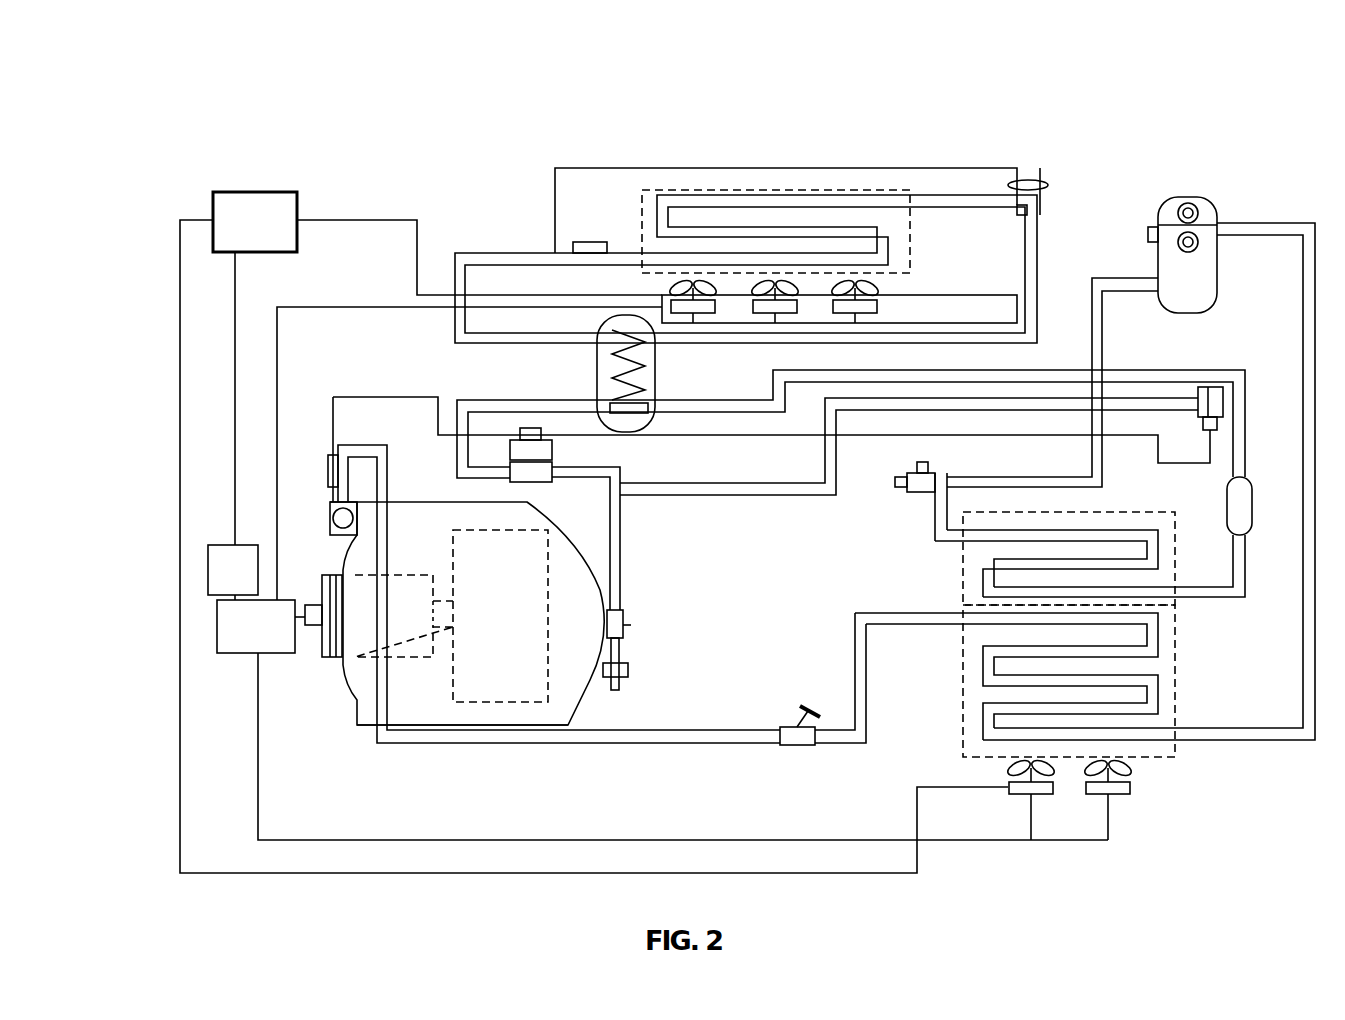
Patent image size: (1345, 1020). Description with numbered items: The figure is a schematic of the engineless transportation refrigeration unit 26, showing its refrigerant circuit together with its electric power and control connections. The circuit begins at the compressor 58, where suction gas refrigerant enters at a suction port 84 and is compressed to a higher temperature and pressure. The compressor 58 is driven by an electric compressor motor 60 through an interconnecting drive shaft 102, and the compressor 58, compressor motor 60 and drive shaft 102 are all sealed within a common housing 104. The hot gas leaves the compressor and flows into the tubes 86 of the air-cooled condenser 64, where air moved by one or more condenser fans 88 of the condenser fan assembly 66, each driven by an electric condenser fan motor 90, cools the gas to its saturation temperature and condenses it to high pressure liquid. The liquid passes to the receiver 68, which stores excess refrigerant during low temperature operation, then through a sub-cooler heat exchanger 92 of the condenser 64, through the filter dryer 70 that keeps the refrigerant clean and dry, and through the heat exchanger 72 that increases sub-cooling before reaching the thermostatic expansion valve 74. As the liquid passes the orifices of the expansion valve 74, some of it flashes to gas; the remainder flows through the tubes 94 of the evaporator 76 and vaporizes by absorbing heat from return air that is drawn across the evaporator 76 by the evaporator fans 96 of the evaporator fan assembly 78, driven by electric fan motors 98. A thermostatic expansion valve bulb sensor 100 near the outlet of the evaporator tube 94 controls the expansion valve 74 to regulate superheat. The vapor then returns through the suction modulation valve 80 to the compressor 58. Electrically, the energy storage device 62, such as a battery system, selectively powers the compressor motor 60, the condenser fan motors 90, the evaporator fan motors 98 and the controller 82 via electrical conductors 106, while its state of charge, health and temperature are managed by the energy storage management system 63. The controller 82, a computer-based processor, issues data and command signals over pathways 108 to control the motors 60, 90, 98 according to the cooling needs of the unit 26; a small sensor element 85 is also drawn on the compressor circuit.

The engineless transportation refrigeration unit 26 is at (1225, 100).
The compressor 58 is at (467, 613).
The electric compressor motor 60 is at (374, 616).
The electric energy storage device 62 is at (256, 626).
The energy storage management system 63 is at (233, 572).
The condenser 64 is at (1180, 618).
The condenser fan assembly 66 is at (1063, 848).
The receiver 68 is at (1218, 265).
The filter dryer 70 is at (1252, 505).
The heat exchanger 72 is at (597, 365).
The thermostatic expansion valve 74 is at (1044, 196).
The evaporator 76 is at (910, 222).
The evaporator fan assembly 78 is at (950, 305).
The suction modulation valve 80 is at (554, 484).
The controller 82 is at (255, 222).
The suction port 84 is at (630, 630).
The sensor 85 is at (340, 525).
The tubes of the condenser 86 is at (1160, 690).
The condenser fan 88 is at (1008, 770).
The condenser fan motor 90 is at (1015, 796).
The sub-cooler heat exchanger 92 is at (960, 578).
The evaporator tube 94 is at (655, 218).
The evaporator fan 96 is at (855, 288).
The evaporator fan motor 98 is at (855, 313).
The thermostatic expansion valve bulb sensor 100 is at (592, 242).
The interconnecting drive shaft 102 is at (443, 630).
The common housing 104 is at (487, 725).
The electrical conductors 106 is at (278, 350).
The pathways 108 is at (236, 283).